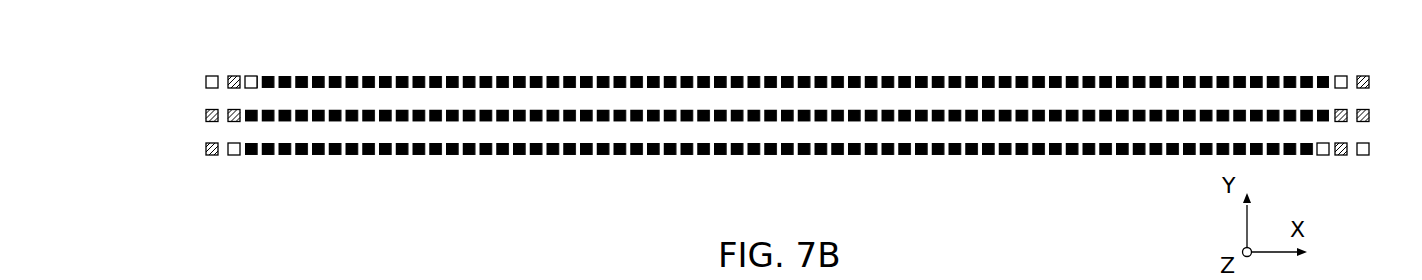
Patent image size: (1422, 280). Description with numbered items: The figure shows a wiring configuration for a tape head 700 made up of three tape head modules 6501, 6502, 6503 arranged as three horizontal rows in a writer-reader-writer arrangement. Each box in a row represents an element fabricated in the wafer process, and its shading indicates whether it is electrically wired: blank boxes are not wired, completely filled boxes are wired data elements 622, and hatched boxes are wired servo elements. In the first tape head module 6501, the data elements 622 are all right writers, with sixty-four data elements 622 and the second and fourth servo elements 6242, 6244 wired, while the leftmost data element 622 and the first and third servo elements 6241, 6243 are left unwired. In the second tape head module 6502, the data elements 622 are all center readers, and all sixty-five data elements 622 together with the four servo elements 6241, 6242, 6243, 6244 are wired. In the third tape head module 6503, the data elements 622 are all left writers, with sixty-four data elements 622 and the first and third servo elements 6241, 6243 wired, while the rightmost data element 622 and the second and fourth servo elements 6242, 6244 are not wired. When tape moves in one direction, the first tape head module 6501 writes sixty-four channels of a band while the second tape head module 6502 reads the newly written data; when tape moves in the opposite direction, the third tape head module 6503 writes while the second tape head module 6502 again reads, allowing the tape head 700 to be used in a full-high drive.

The tape head 700 is at (136, 58).
The first tape head module 6501 is at (134, 82).
The second tape head module 6502 is at (134, 117).
The third tape head module 6503 is at (134, 148).
The first servo element 6241 is at (206, 146).
The second servo element 6242 is at (229, 89).
The third servo element 6243 is at (1339, 74).
The fourth servo element 6244 is at (1369, 123).
The data elements 622 is at (772, 143).